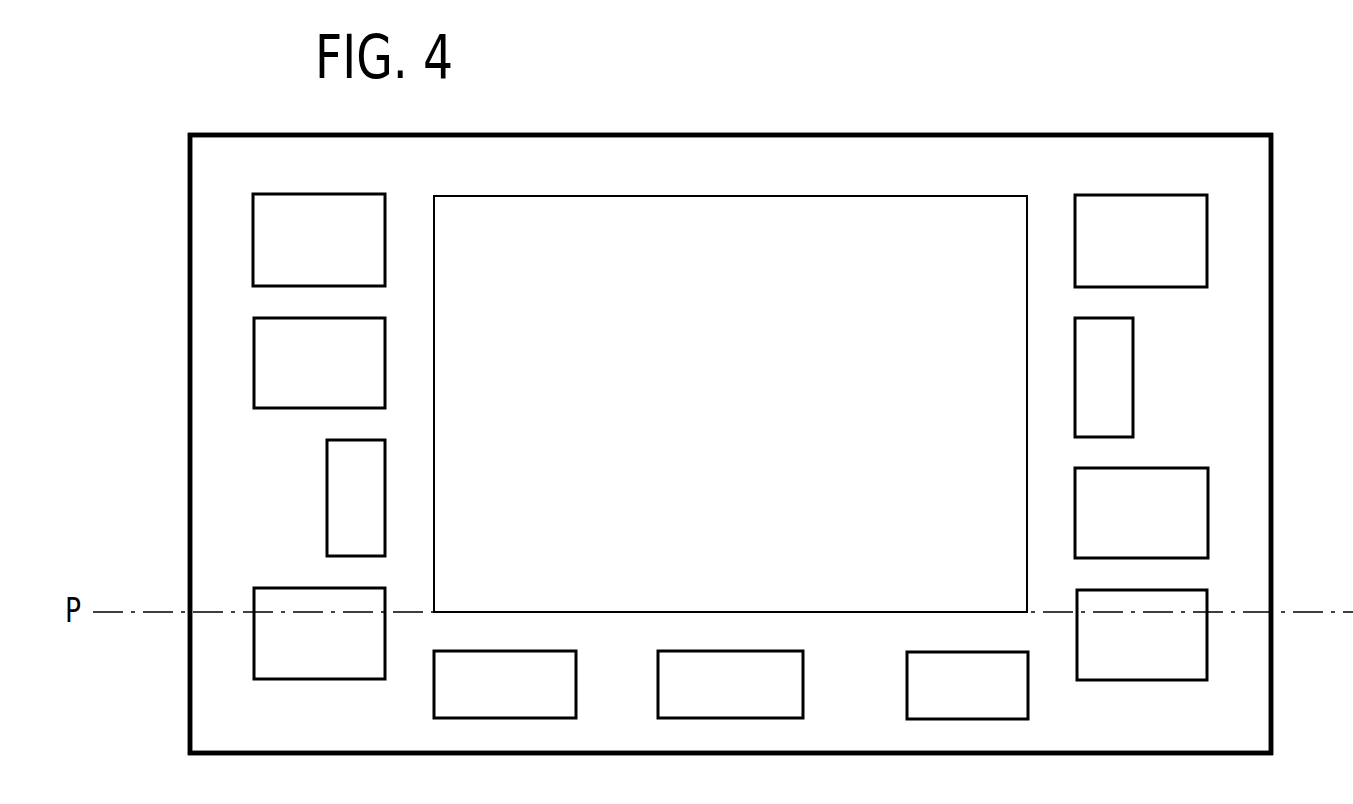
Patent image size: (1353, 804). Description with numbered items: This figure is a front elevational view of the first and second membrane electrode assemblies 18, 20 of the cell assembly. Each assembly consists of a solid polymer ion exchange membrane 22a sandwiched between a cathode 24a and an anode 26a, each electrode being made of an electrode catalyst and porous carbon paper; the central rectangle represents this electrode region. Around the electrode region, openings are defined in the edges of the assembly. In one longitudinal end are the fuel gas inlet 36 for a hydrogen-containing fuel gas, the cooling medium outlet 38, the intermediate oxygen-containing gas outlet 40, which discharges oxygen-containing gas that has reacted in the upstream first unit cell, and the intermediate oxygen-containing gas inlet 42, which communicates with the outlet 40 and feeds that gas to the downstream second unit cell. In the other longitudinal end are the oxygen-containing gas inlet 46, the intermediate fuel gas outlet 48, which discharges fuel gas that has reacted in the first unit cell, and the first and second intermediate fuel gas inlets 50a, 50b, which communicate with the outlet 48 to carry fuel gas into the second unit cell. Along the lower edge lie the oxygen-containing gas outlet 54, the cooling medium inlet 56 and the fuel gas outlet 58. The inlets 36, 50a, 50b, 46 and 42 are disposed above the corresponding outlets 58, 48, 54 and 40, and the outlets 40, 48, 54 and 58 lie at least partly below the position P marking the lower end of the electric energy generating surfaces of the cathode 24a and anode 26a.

The first membrane electrode assembly 18 is at (1130, 103).
The second membrane electrode assembly 20 is at (730, 444).
The solid polymer ion exchange membrane 22a is at (880, 160).
The cathode 24a is at (590, 217).
The anode 26a is at (715, 217).
The fuel gas inlet 36 is at (356, 498).
The cooling medium outlet 38 is at (319, 240).
The intermediate oxygen-containing gas outlet 40 is at (319, 633).
The intermediate oxygen-containing gas inlet 42 is at (319, 363).
The oxygen-containing gas inlet 46 is at (1104, 377).
The intermediate fuel gas outlet 48 is at (1142, 635).
The first intermediate fuel gas inlet 50a is at (1141, 513).
The second intermediate fuel gas inlet 50b is at (1141, 241).
The oxygen-containing gas outlet 54 is at (967, 685).
The cooling medium inlet 56 is at (730, 684).
The fuel gas outlet 58 is at (505, 684).